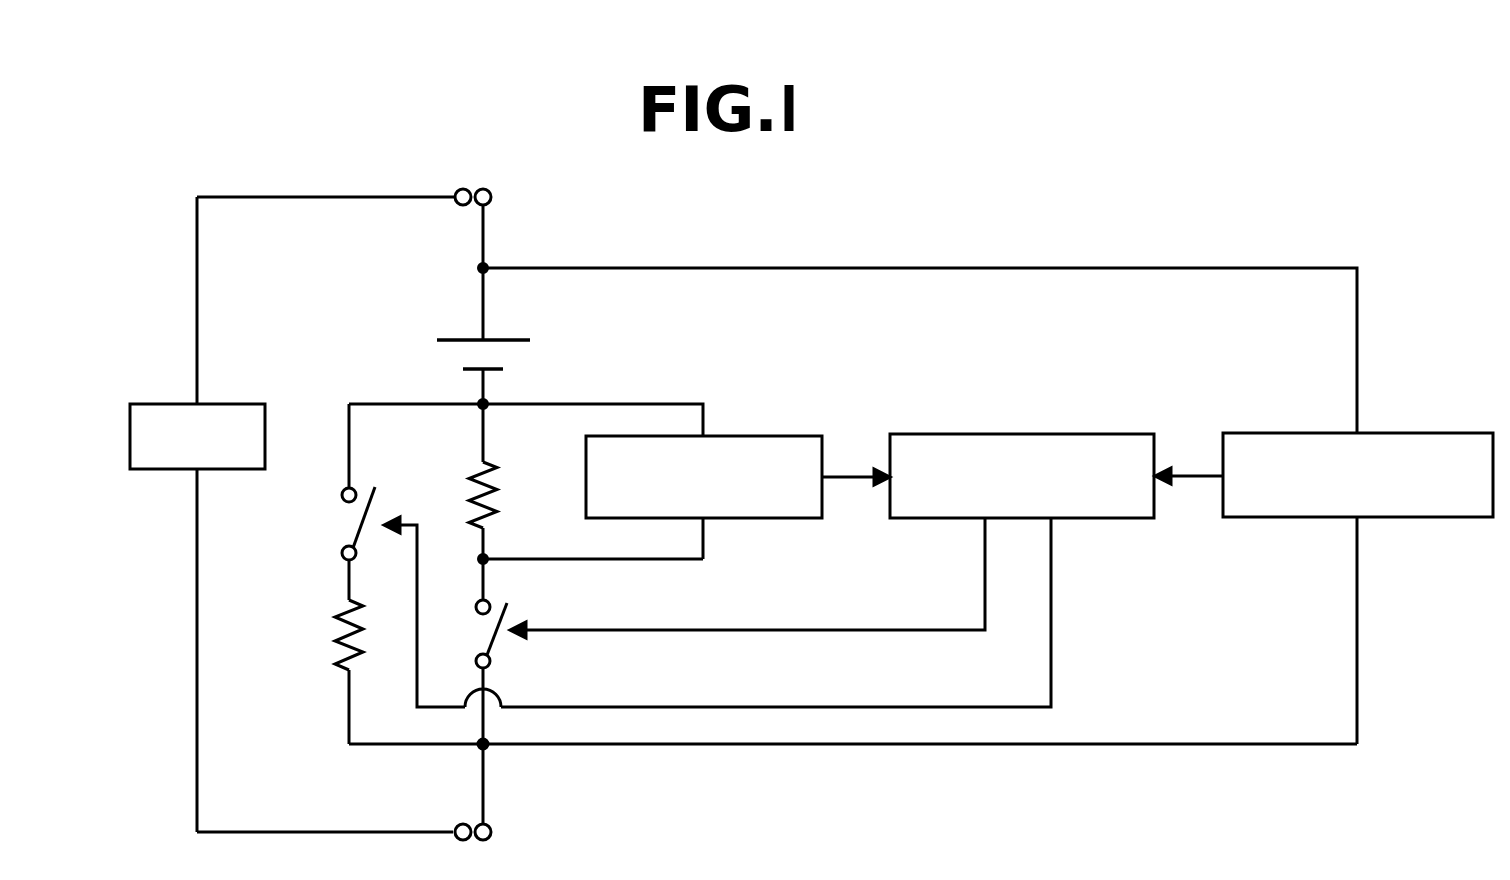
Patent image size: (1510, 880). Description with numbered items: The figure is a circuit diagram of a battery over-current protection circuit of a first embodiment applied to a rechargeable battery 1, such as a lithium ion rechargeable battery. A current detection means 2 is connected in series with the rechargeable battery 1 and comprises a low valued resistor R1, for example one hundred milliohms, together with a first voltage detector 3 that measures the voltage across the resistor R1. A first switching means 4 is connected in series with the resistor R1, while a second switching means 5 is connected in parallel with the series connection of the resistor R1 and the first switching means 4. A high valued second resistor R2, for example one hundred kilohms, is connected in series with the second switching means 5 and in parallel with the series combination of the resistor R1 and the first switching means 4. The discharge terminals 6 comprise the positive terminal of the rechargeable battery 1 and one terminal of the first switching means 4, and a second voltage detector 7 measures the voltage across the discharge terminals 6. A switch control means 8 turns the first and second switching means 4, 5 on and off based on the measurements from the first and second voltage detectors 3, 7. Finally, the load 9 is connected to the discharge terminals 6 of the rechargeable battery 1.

The rechargeable battery 1 is at (458, 357).
The current detection means 2 is at (578, 352).
The first voltage detector 3 is at (655, 435).
The first switching means 4 is at (497, 647).
The second switching means 5 is at (338, 518).
The discharge terminals 6 is at (492, 197).
The second voltage detector 7 is at (1282, 433).
The switch control means 8 is at (1023, 433).
The load 9 is at (150, 403).
The resistor R1 is at (500, 478).
The second resistor R2 is at (330, 650).